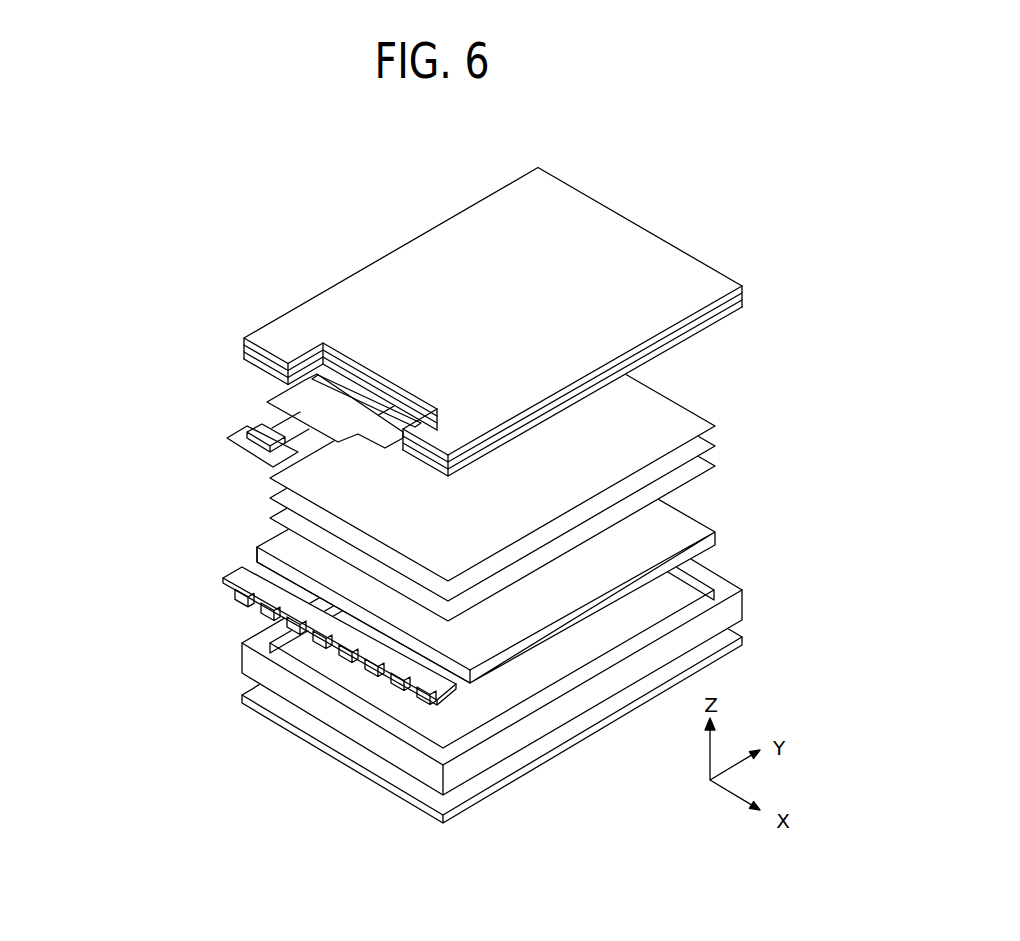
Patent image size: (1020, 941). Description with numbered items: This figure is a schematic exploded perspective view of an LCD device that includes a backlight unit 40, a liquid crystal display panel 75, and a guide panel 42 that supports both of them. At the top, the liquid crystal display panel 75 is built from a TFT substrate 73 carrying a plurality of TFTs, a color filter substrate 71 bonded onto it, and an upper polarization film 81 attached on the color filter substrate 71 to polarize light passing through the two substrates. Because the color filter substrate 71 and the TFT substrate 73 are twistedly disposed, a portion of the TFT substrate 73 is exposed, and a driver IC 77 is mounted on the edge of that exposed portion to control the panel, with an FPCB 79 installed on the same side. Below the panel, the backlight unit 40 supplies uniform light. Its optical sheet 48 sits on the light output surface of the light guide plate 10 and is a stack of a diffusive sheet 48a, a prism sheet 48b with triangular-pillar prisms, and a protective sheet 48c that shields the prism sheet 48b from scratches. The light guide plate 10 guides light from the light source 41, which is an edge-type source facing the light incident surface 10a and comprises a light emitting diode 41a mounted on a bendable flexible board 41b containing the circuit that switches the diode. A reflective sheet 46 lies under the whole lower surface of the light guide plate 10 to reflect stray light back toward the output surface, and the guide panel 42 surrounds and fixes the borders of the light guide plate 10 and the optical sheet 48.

The upper polarization film 81 is at (386, 268).
The liquid crystal display panel 75 is at (545, 381).
The color filter substrate 71 is at (745, 293).
The TFT substrate 73 is at (745, 305).
The driver IC 77 is at (283, 376).
The FPCB 79 is at (233, 438).
The light guide plate 10 is at (518, 629).
The light incident surface 10a is at (425, 648).
The backlight unit 40 is at (412, 573).
The optical sheet 48 is at (421, 472).
The diffusive sheet 48a is at (268, 519).
The prism sheet 48b is at (268, 499).
The protective sheet 48c is at (268, 479).
The light source 41 is at (292, 636).
The light emitting diode 41a is at (238, 602).
The flexible board 41b is at (238, 572).
The guide panel 42 is at (250, 664).
The reflective sheet 46 is at (128, 502).